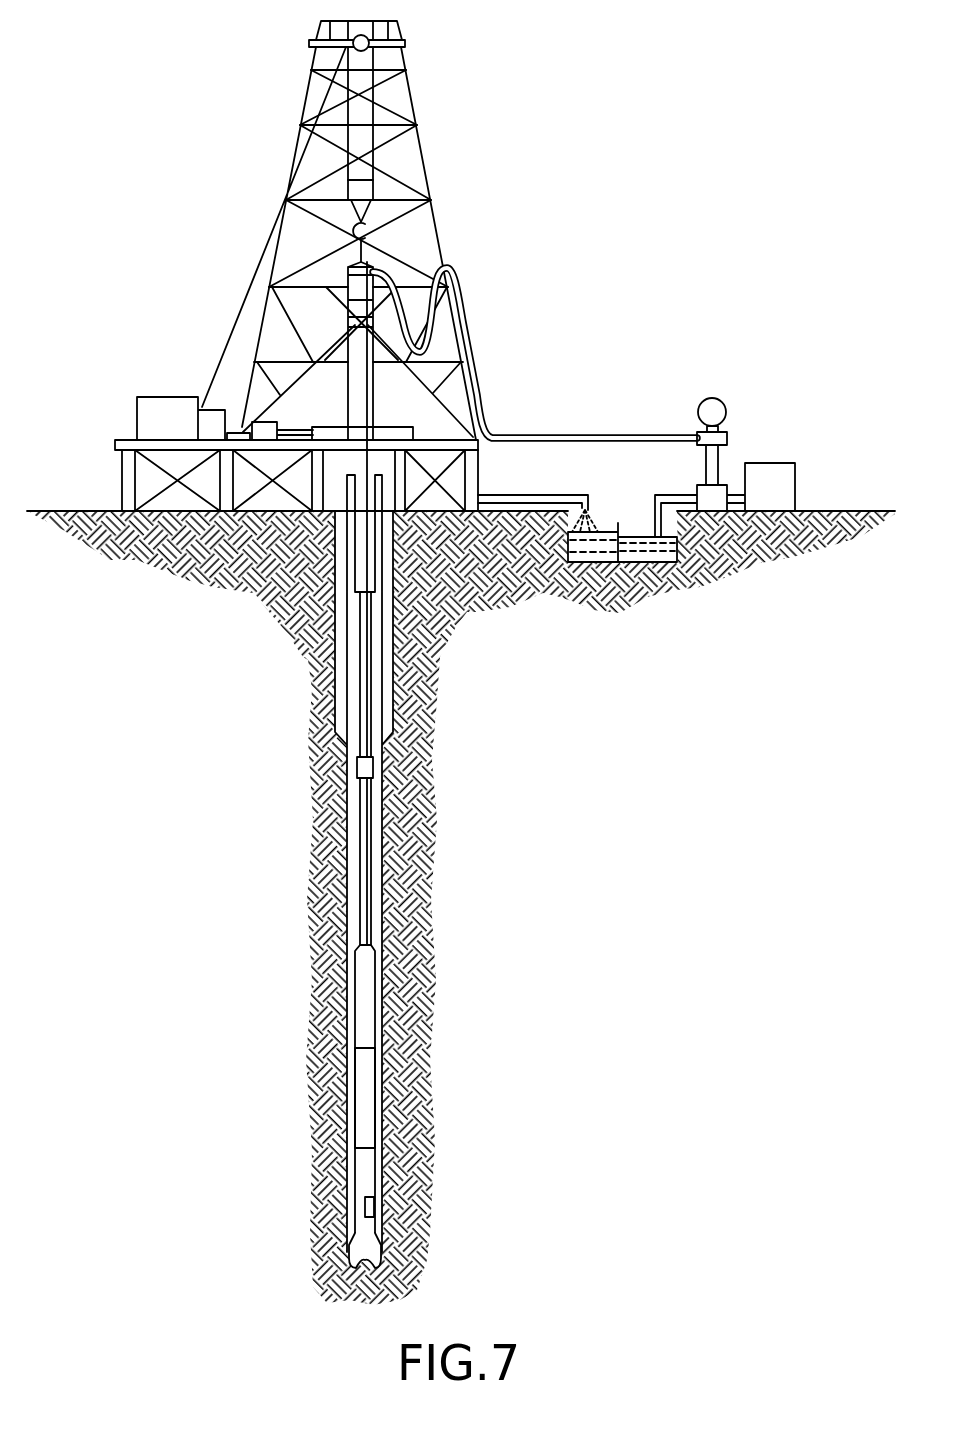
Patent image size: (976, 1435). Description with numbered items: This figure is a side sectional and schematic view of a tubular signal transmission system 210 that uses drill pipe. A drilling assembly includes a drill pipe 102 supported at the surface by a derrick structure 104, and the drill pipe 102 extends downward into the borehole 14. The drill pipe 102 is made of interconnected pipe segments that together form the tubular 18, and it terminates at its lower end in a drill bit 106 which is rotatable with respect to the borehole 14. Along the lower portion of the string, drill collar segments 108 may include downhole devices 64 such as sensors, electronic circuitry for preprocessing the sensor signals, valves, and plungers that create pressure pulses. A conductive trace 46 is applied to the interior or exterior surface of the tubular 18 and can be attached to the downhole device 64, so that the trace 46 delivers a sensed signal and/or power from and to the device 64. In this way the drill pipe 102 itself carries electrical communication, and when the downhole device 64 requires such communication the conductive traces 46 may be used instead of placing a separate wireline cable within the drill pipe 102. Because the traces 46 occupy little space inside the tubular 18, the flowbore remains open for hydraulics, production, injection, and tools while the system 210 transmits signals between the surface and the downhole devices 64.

The derrick structure 104 is at (578, 300).
The tubular signal transmission system 210 is at (228, 686).
The borehole 14 is at (357, 872).
The tubular 18 is at (372, 798).
The drill pipe 102 is at (372, 708).
The conductive trace 46 is at (368, 980).
The drill collar segment 108 is at (363, 1083).
The downhole device 64 is at (370, 1207).
The drill bit 106 is at (363, 1250).